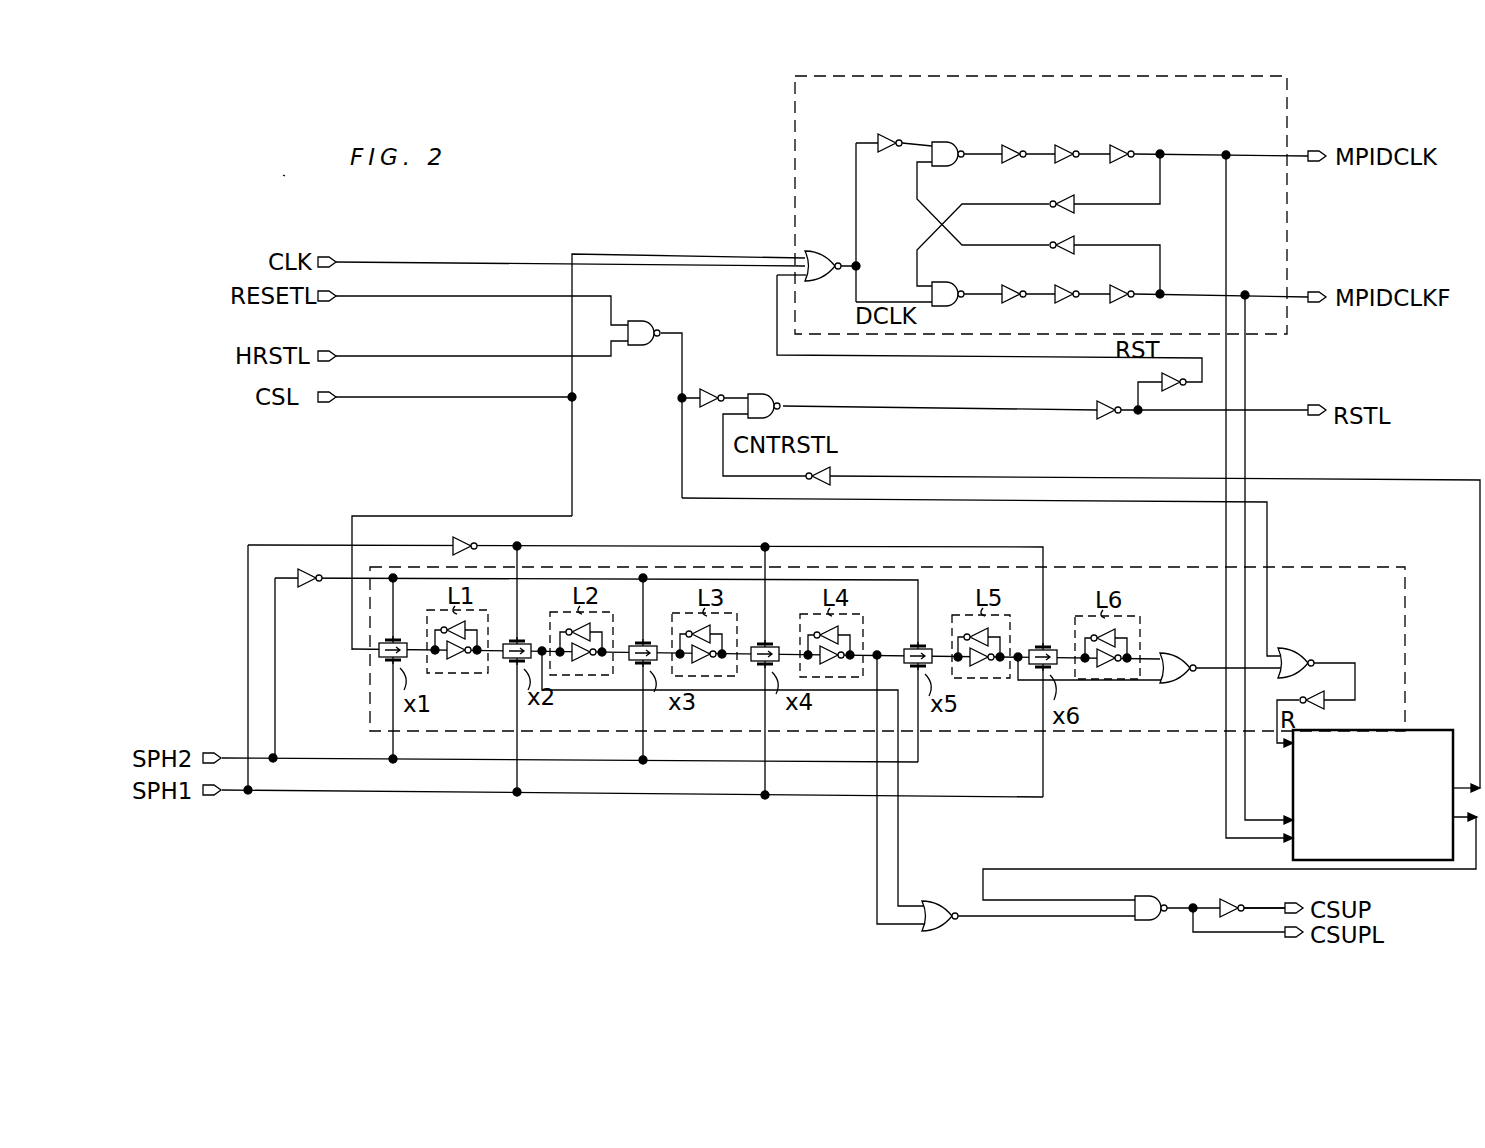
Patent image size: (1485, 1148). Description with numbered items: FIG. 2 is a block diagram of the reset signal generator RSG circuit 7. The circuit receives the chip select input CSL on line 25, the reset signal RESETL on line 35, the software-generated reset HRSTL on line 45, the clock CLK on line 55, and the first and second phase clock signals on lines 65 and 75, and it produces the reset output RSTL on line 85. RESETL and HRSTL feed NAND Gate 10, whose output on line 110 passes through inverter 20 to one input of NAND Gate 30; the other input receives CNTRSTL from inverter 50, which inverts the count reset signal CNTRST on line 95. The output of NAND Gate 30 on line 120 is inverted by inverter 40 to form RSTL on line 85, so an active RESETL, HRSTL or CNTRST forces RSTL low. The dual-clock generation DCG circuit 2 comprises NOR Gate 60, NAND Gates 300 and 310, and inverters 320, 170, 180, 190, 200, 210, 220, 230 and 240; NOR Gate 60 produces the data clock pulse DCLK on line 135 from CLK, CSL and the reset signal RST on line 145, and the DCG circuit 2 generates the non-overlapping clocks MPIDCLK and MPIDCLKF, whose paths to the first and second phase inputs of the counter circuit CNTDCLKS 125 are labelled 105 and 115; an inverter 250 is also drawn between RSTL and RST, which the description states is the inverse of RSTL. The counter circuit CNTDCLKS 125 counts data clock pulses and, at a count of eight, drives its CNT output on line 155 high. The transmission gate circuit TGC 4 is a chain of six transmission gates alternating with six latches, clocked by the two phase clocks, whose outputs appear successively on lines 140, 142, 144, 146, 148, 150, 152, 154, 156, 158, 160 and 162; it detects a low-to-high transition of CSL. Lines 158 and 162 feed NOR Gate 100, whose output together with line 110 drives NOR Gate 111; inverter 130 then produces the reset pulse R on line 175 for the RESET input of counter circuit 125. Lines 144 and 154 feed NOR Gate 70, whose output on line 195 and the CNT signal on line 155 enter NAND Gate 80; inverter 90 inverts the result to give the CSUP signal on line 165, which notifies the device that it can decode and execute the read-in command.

The dual-clock generation circuit 2 is at (795, 125).
The transmission gate circuit 4 is at (1146, 566).
The reset signal generator circuit 7 is at (290, 195).
The NAND gate 10 is at (652, 320).
The inverter 20 is at (706, 407).
The line 25 is at (462, 398).
The NAND gate 30 is at (768, 396).
The line 35 is at (396, 296).
The inverter 40 is at (1106, 420).
The line 45 is at (462, 356).
The inverter 50 is at (838, 476).
The line 55 is at (396, 262).
The NOR gate 60 is at (822, 252).
The line 65 is at (288, 792).
The NOR gate 70 is at (936, 900).
The line 75 is at (298, 758).
The NAND gate 80 is at (1146, 896).
The line 85 is at (1264, 412).
The inverter 90 is at (1230, 890).
The line 95 is at (1274, 480).
The NOR gate 100 is at (1188, 654).
The MPIDCLK line 105 is at (1228, 232).
The line 110 is at (684, 370).
The NOR gate 111 is at (1308, 652).
The MPIDCLKF line 115 is at (1246, 396).
The line 120 is at (906, 408).
The counter circuit 125 is at (1422, 728).
The inverter 130 is at (1332, 692).
The line 135 is at (886, 290).
The line 140 is at (408, 636).
The line 142 is at (492, 636).
The line 144 is at (532, 636).
The line 145 is at (1012, 358).
The line 146 is at (612, 636).
The line 148 is at (658, 636).
The line 150 is at (742, 636).
The line 152 is at (784, 636).
The line 154 is at (888, 640).
The line 155 is at (994, 869).
The line 156 is at (940, 640).
The line 158 is at (1024, 640).
The line 160 is at (1062, 640).
The line 162 is at (1150, 640).
The line 165 is at (1272, 904).
The inverter 170 is at (1010, 144).
The line 175 is at (1270, 740).
The inverter 180 is at (1064, 144).
The inverter 190 is at (1124, 144).
The line 195 is at (1068, 920).
The inverter 200 is at (1078, 200).
The inverter 210 is at (1078, 242).
The inverter 220 is at (1008, 288).
The inverter 230 is at (1058, 290).
The inverter 240 is at (1114, 290).
The inverter 250 is at (1170, 392).
The NAND gate 300 is at (945, 140).
The NAND gate 310 is at (942, 288).
The inverter 320 is at (876, 140).